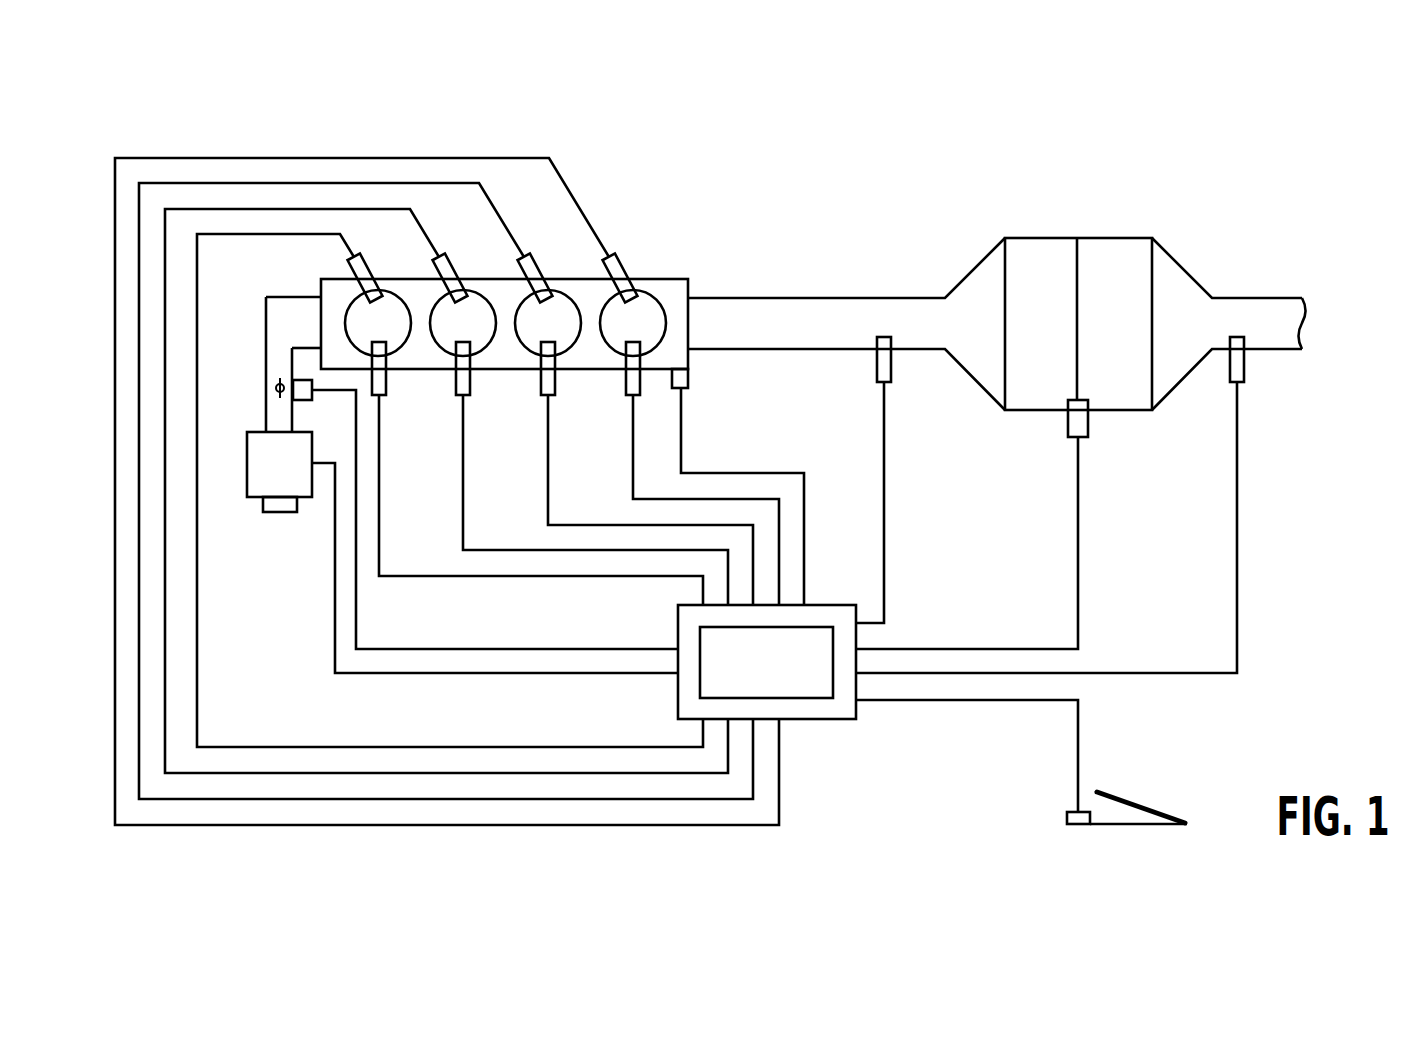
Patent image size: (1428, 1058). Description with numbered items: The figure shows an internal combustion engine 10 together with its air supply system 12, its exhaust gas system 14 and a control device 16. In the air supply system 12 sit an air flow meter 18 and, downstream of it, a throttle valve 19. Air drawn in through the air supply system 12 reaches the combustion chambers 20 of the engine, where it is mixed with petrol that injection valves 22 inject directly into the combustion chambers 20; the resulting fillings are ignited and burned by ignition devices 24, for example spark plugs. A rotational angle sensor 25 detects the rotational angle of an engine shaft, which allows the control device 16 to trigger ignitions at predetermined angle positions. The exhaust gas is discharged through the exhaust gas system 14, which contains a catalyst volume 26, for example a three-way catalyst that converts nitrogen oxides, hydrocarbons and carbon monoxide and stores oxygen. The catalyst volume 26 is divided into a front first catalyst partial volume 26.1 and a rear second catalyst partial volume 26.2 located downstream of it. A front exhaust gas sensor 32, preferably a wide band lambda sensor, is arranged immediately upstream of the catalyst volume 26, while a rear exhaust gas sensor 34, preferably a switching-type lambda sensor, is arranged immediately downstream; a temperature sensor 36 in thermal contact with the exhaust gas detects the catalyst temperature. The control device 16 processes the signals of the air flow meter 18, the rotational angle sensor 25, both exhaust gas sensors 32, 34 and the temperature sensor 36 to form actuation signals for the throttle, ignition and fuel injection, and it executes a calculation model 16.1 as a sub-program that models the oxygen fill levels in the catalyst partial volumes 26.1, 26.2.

The internal combustion engine 10 is at (718, 146).
The air supply system 12 is at (273, 525).
The exhaust gas system 14 is at (1335, 458).
The control device 16 is at (830, 722).
The calculation model 16.1 is at (795, 680).
The air flow meter 18 is at (294, 481).
The throttle valve 19 is at (276, 387).
The combustion chambers 20 is at (647, 309).
The injection valves 22 is at (632, 380).
The ignition devices 24 is at (617, 261).
The rotational angle sensor 25 is at (677, 384).
The catalyst volume 26 is at (977, 420).
The first catalyst partial volume 26.1 is at (1033, 257).
The second catalyst partial volume 26.2 is at (1133, 257).
The front exhaust gas sensor 32 is at (883, 357).
The rear exhaust gas sensor 34 is at (1243, 357).
The temperature sensor 36 is at (1083, 420).